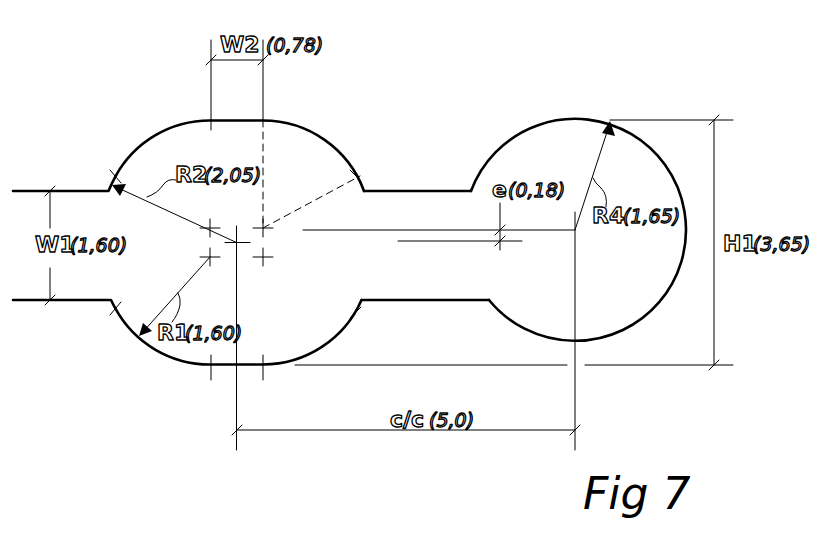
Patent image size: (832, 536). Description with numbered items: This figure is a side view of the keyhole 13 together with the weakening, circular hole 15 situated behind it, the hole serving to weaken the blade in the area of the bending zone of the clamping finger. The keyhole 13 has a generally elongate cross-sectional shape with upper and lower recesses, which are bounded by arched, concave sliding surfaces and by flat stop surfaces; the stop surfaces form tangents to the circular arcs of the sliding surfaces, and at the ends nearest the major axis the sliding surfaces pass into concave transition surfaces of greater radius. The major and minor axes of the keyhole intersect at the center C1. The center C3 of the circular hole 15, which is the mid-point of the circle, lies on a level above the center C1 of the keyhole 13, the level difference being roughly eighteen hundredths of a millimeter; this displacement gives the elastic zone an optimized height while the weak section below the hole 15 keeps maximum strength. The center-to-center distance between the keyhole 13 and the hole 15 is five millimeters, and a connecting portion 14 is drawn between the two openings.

The keyhole 13 is at (329, 142).
The neck connecting portion of slot 14 is at (430, 278).
The circular hole 15 is at (504, 143).
The center of the keyhole C1 is at (236, 246).
The center of the hole C3 is at (575, 233).